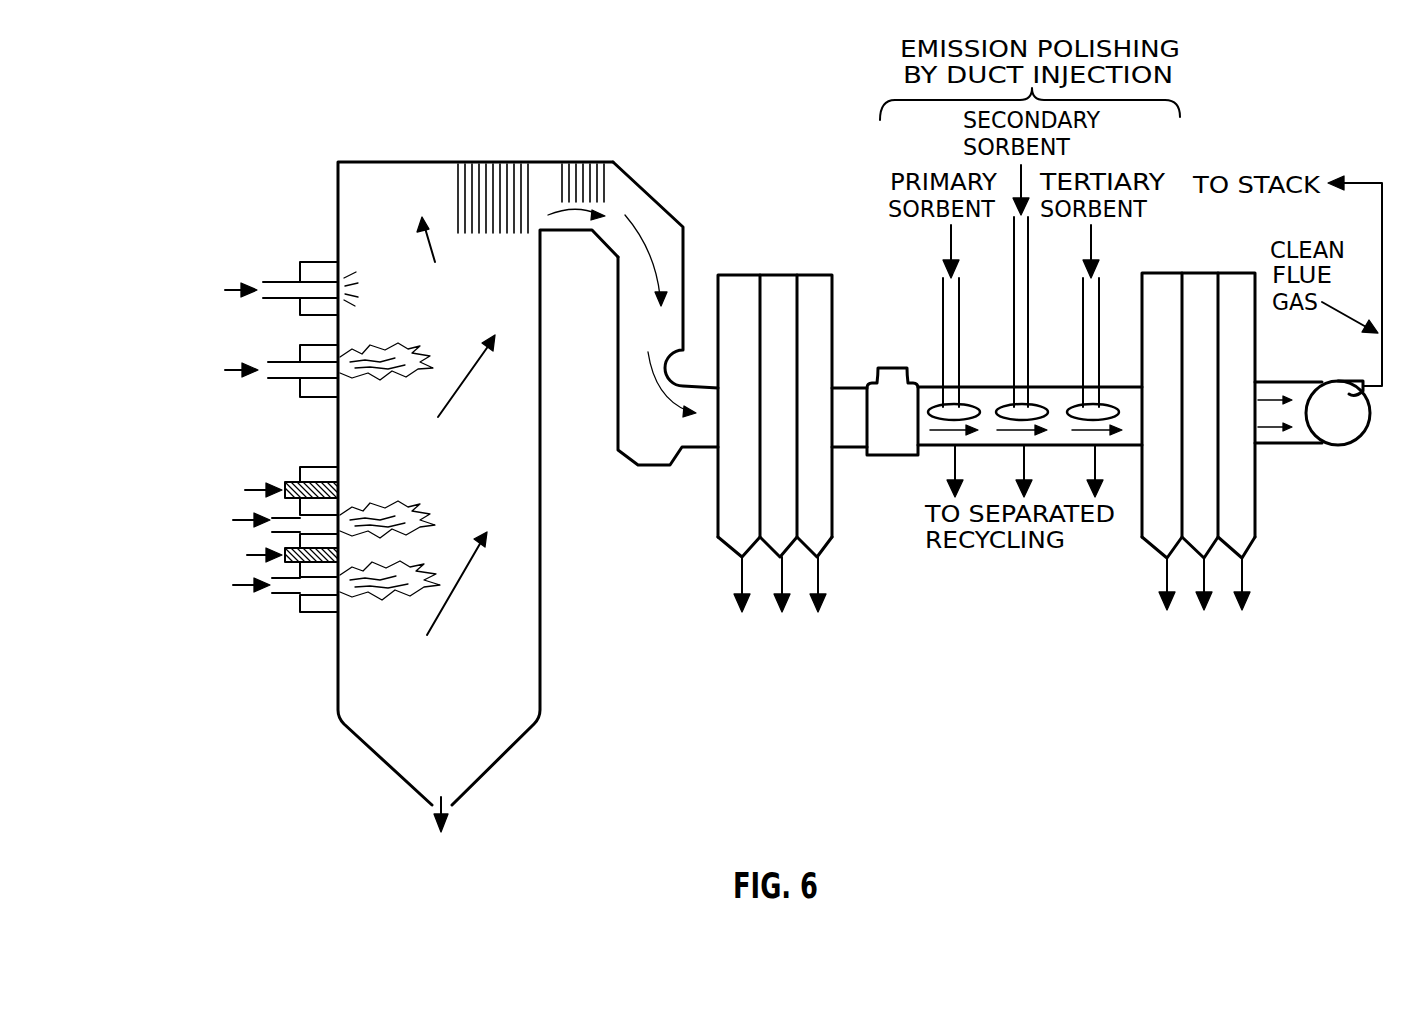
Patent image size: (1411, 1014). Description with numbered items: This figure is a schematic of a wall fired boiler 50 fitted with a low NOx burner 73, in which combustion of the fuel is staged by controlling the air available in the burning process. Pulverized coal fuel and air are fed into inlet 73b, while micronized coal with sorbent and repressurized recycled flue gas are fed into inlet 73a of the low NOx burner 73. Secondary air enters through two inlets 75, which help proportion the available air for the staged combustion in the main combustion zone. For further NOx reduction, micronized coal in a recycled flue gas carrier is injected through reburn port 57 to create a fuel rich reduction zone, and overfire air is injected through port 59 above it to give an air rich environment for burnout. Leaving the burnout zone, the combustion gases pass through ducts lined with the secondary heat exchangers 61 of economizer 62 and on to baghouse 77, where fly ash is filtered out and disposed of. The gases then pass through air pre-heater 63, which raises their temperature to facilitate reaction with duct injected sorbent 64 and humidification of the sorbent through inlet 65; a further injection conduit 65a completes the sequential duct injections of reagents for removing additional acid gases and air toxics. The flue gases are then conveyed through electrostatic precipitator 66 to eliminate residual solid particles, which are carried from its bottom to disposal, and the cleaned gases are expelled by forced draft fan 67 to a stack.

The wall fired boiler 50 is at (538, 634).
The reburn port 57 is at (287, 379).
The overfire air port 59 is at (318, 267).
The secondary heat exchangers 61 is at (505, 161).
The economizer 62 is at (645, 190).
The air pre-heater 63 is at (888, 372).
The duct injected sorbent injection conduit 64 is at (968, 405).
The sorbent humidification inlet 65 is at (1035, 405).
The tertiary injection conduit 65a is at (1110, 405).
The electrostatic precipitator 66 is at (1190, 282).
The forced draft fan 67 is at (1337, 446).
The low NOx burner 73 is at (310, 567).
The micronized coal inlet 73a is at (287, 518).
The pulverized coal and air inlet 73b is at (290, 591).
The secondary air inlets 75 is at (320, 548).
The baghouse 77 is at (768, 282).